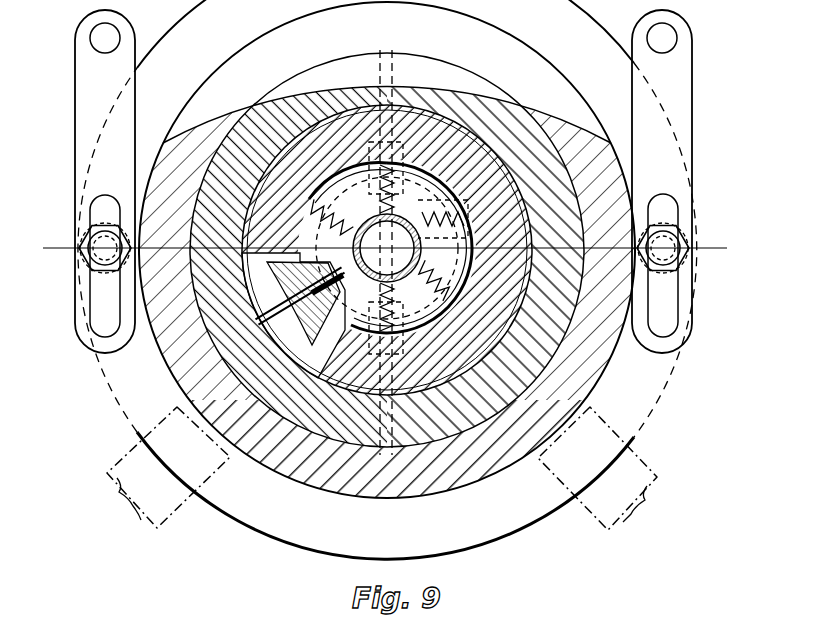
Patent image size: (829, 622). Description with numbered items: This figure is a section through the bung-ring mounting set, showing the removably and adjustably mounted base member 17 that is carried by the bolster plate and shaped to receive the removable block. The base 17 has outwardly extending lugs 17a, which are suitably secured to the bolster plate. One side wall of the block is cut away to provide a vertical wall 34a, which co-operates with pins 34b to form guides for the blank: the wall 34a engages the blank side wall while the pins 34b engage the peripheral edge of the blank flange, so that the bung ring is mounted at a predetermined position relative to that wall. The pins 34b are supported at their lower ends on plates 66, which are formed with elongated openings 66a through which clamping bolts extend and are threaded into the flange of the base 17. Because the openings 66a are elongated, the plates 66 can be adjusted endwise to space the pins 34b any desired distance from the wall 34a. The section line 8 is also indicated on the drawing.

The section line 8- 8 is at (384, 248).
The base member 17 is at (257, 523).
The outwardly extending lugs 17a is at (145, 450).
The vertical wall 34a is at (374, 90).
The pins 34b is at (677, 38).
The plates 66 is at (88, 75).
The elongated openings 66a is at (100, 297).